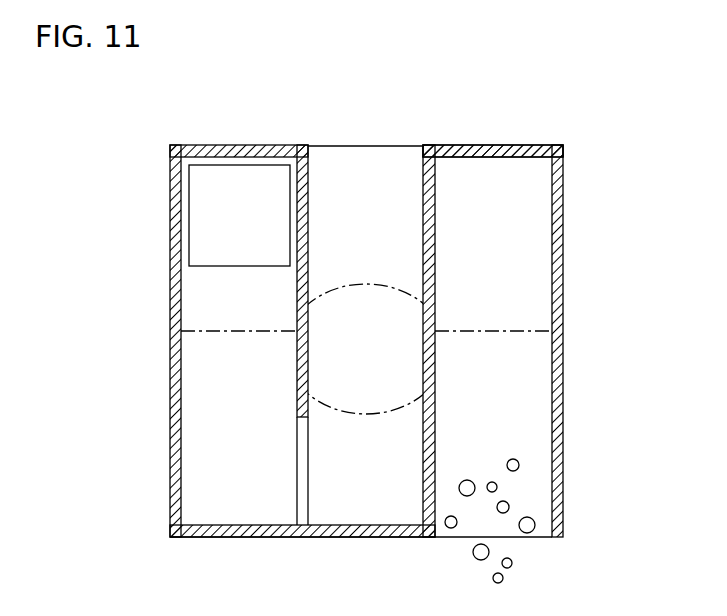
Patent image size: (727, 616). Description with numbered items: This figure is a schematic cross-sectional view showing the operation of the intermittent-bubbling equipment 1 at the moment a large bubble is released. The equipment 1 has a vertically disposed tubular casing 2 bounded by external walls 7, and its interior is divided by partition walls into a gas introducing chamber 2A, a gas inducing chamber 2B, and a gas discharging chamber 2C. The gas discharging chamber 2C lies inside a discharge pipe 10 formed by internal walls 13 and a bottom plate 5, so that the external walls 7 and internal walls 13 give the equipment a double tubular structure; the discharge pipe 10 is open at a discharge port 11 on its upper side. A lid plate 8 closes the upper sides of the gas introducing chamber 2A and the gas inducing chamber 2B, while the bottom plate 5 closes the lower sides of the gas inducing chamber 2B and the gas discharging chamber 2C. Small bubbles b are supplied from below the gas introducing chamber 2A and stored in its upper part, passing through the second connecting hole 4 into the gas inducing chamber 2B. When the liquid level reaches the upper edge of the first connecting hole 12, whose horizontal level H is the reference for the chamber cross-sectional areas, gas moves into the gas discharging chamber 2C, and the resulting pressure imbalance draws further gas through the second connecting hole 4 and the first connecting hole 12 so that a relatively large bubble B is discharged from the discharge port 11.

The intermittent-bubbling equipment 1 is at (570, 138).
The casing 2 is at (567, 290).
The gas introducing chamber 2A is at (538, 420).
The gas inducing chamber 2B is at (197, 293).
The gas discharging chamber 2C is at (325, 500).
The second connecting hole 4 is at (241, 165).
The bottom plate 5 is at (347, 540).
The external walls 7 is at (170, 352).
The lid plate 8 is at (493, 145).
The discharge pipe 10 is at (436, 230).
The discharge port 11 is at (417, 145).
The first connecting hole 12 is at (303, 468).
The internal walls 13 is at (299, 392).
The bubble B is at (367, 290).
The horizontal level H is at (170, 418).
The bubbles b is at (515, 563).